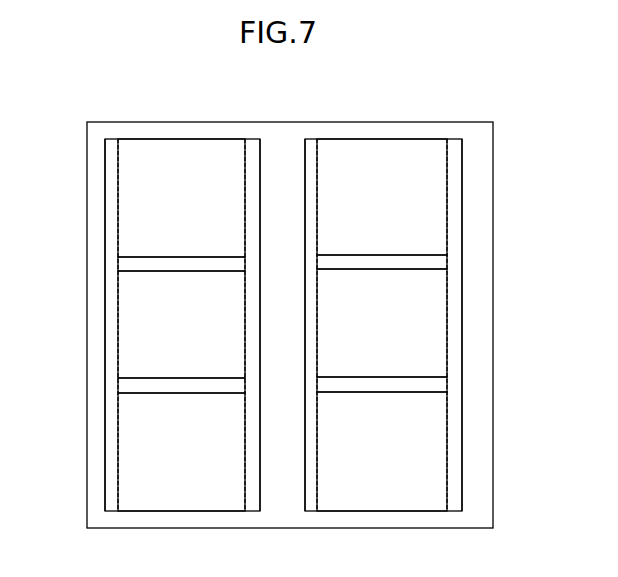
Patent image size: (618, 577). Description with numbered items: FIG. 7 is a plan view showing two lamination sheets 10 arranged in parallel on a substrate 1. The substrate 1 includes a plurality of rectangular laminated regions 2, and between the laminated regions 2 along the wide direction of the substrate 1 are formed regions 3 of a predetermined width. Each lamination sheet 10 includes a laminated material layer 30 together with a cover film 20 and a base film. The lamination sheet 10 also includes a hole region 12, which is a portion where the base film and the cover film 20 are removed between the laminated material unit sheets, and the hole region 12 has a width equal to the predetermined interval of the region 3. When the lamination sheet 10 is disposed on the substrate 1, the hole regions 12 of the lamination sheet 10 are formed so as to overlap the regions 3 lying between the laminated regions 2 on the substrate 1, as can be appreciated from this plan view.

The substrate 1 is at (95, 340).
The laminated region 2 is at (138, 458).
The region 3 is at (127, 387).
The lamination sheet 10 is at (163, 139).
The hole region 12 is at (120, 263).
The cover film 20 is at (452, 318).
The laminated material layer 30 is at (140, 183).